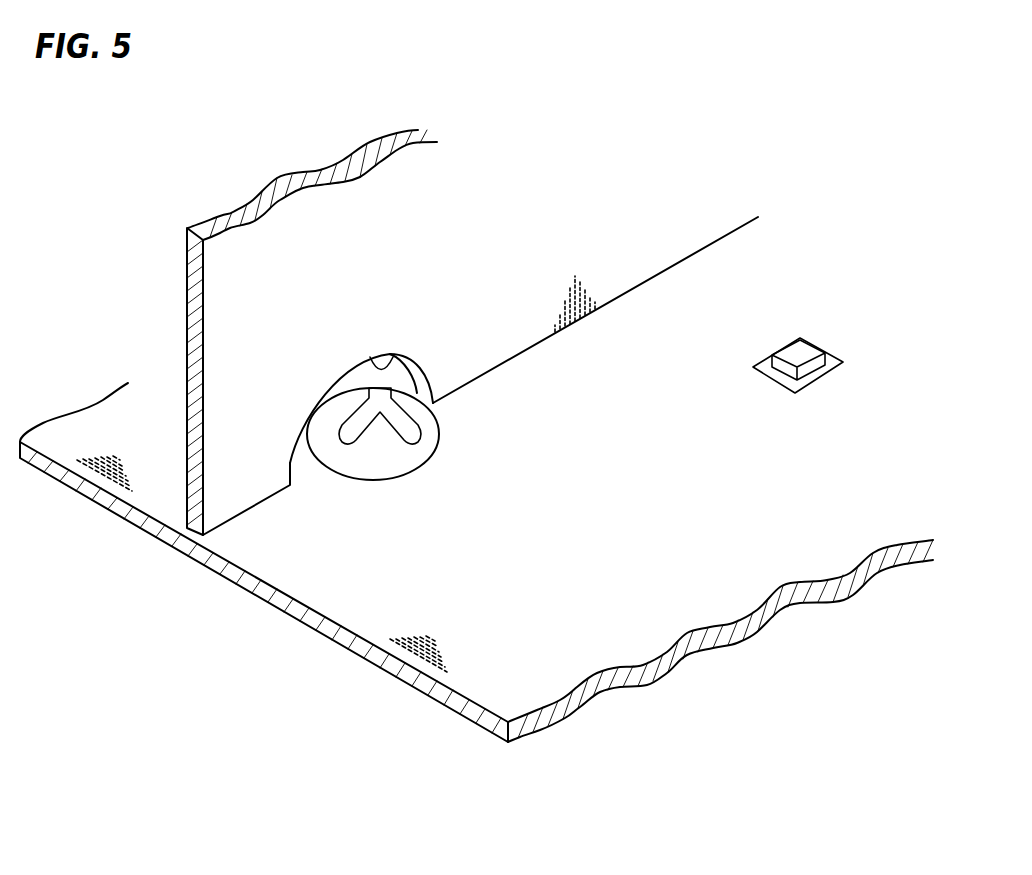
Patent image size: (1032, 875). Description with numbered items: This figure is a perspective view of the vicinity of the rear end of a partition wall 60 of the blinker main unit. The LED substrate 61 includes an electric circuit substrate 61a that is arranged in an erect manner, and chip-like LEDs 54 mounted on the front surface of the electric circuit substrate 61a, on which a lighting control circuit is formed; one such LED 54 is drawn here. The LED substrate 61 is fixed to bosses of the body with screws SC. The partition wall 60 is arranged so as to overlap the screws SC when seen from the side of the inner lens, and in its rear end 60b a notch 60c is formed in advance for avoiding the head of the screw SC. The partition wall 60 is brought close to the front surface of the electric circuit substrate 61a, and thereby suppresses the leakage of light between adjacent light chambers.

The partition wall 60 is at (192, 310).
The rear end of the partition wall 60b is at (252, 492).
The notch 60c is at (391, 366).
The screw SC is at (430, 435).
The LED 54 is at (807, 347).
The electric circuit substrate 61a is at (308, 620).
The LED substrate 61 is at (476, 479).